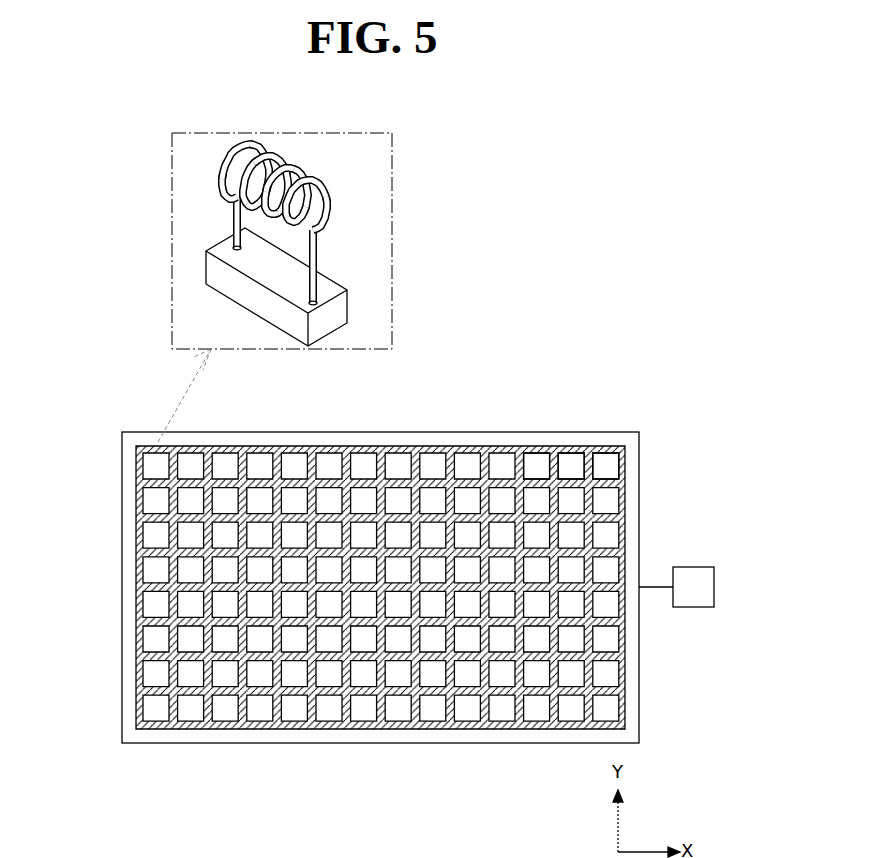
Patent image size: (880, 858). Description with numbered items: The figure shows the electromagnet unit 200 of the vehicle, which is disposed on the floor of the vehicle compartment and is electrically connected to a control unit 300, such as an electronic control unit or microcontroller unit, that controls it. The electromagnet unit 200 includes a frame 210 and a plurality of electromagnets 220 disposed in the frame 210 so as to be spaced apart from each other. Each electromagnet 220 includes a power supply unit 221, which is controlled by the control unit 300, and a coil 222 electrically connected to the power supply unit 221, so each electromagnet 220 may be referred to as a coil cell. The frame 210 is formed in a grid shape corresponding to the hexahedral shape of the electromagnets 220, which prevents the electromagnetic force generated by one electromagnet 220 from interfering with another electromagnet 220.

The electromagnet unit 200 is at (110, 712).
The frame 210 is at (473, 452).
The electromagnet 220 is at (595, 465).
The power supply unit 221 is at (340, 310).
The coil 222 is at (341, 222).
The control unit 300 is at (692, 566).